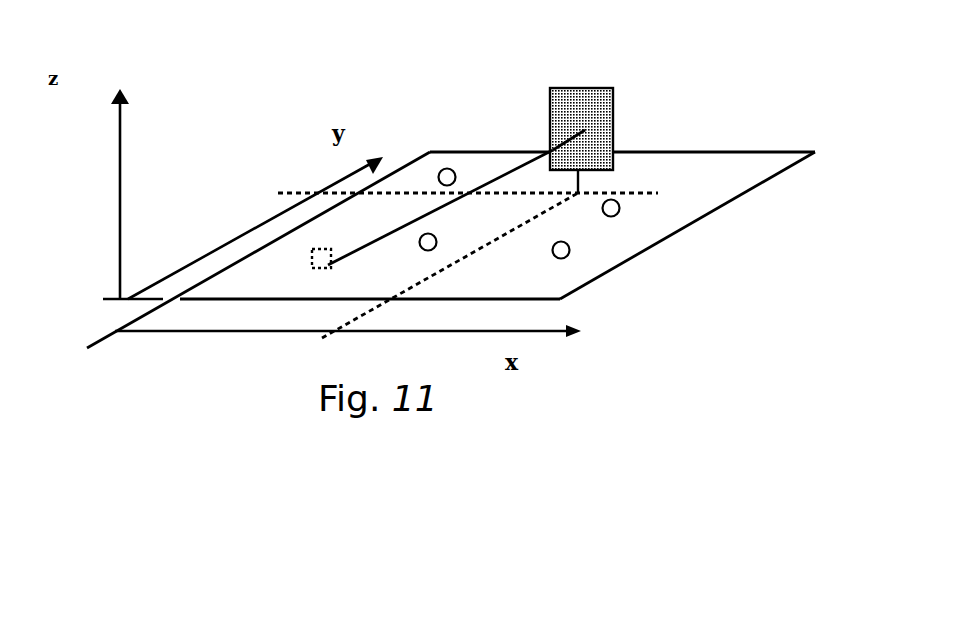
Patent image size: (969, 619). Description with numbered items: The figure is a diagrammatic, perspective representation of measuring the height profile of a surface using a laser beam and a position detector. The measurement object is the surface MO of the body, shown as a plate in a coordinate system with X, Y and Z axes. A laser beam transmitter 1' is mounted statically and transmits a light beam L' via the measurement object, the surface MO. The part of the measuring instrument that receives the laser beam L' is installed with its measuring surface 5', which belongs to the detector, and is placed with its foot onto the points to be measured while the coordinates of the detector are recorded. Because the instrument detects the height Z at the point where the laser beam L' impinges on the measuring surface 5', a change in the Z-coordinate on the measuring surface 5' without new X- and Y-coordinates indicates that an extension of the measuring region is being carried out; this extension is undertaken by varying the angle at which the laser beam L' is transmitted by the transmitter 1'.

The laser beam transmitter 1' is at (271, 179).
The measuring surface 5' is at (639, 98).
The light beam L' is at (468, 193).
The surface of the body MO is at (613, 238).